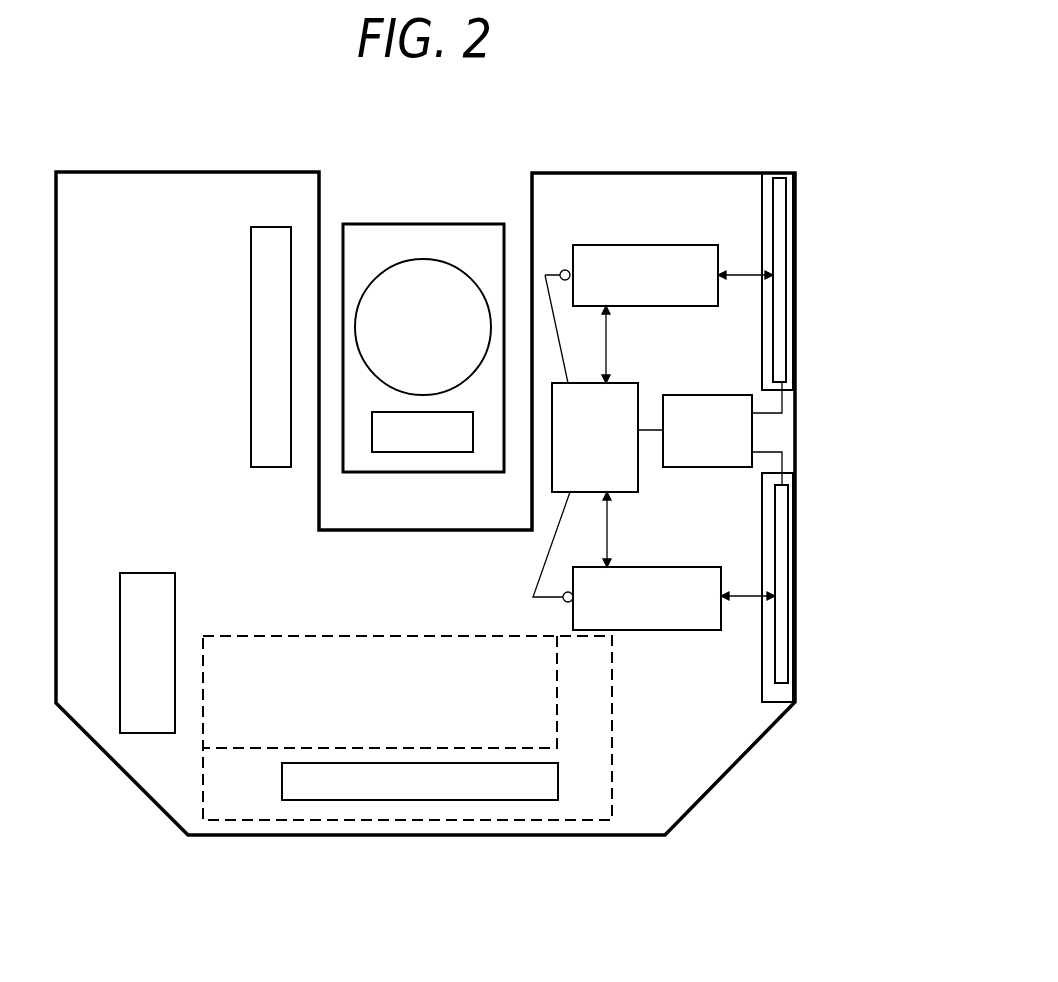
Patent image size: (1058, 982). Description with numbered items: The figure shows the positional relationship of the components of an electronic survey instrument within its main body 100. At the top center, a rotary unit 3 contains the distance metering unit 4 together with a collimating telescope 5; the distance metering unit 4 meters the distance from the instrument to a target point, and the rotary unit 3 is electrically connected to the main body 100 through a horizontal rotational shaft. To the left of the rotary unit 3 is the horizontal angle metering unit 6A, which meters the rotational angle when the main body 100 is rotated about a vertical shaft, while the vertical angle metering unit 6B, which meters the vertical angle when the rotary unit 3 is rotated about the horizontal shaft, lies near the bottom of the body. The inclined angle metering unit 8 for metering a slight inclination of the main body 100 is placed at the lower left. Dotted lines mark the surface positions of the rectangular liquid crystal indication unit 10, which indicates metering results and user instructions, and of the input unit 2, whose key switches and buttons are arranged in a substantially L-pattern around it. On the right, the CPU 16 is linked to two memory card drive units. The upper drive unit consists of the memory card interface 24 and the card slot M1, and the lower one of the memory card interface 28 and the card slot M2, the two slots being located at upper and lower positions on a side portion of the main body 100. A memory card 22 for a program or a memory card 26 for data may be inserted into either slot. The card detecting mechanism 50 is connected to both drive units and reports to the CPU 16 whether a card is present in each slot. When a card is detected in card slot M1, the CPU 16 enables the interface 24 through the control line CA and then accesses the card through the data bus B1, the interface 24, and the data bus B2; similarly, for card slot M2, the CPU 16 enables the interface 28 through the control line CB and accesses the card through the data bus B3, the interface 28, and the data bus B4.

The main body 100 is at (232, 847).
The input unit 2 is at (562, 822).
The rotary unit 3 is at (446, 224).
The distance metering unit 4 is at (407, 440).
The collimating telescope 5 is at (390, 266).
The horizontal angle metering unit 6A is at (268, 468).
The vertical angle metering unit 6B is at (325, 803).
The inclined angle metering unit 8 is at (120, 711).
The indication unit 10 is at (222, 719).
The CPU 16 is at (634, 383).
The memory card for a program 22 is at (773, 205).
The memory card interface 24 is at (608, 245).
The memory card for data 26 is at (775, 664).
The memory card interface 28 is at (695, 567).
The card detecting mechanism 50 is at (722, 395).
The data bus B1 is at (620, 344).
The data bus B2 is at (745, 289).
The data bus B3 is at (622, 529).
The data bus B4 is at (748, 610).
The control line CA is at (549, 275).
The control line CB is at (545, 565).
The card slot M1 is at (767, 176).
The card slot M2 is at (771, 693).